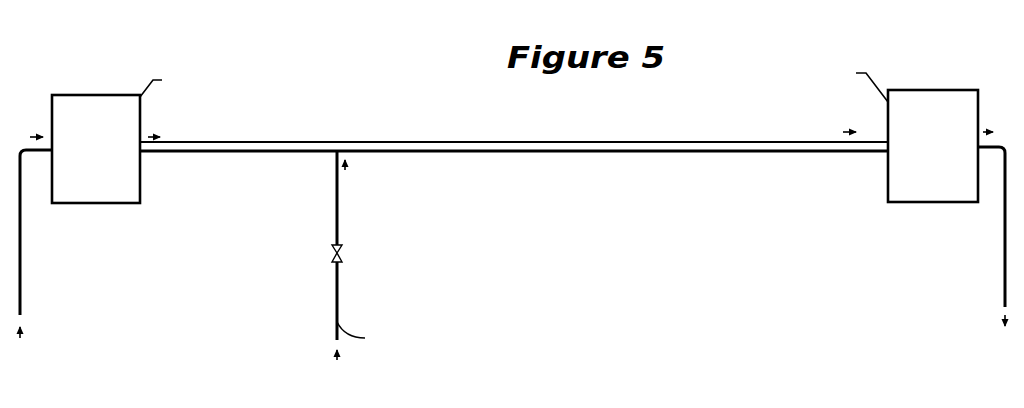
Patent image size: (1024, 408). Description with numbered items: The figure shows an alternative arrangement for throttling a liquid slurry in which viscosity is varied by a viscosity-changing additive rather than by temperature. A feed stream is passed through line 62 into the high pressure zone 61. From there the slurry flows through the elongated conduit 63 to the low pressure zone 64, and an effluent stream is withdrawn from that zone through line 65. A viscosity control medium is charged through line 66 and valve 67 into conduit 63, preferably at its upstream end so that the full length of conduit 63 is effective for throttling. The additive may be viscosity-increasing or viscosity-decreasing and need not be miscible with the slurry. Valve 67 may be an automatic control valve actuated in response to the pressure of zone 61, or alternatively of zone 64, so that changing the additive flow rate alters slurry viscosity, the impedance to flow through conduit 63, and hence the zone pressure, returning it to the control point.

The high pressure zone 61 is at (102, 94).
The line 62 is at (20, 282).
The elongated conduit 63 is at (430, 142).
The low pressure zone 64 is at (945, 90).
The line 65 is at (1005, 285).
The line 66 is at (337, 307).
The valve 67 is at (343, 256).